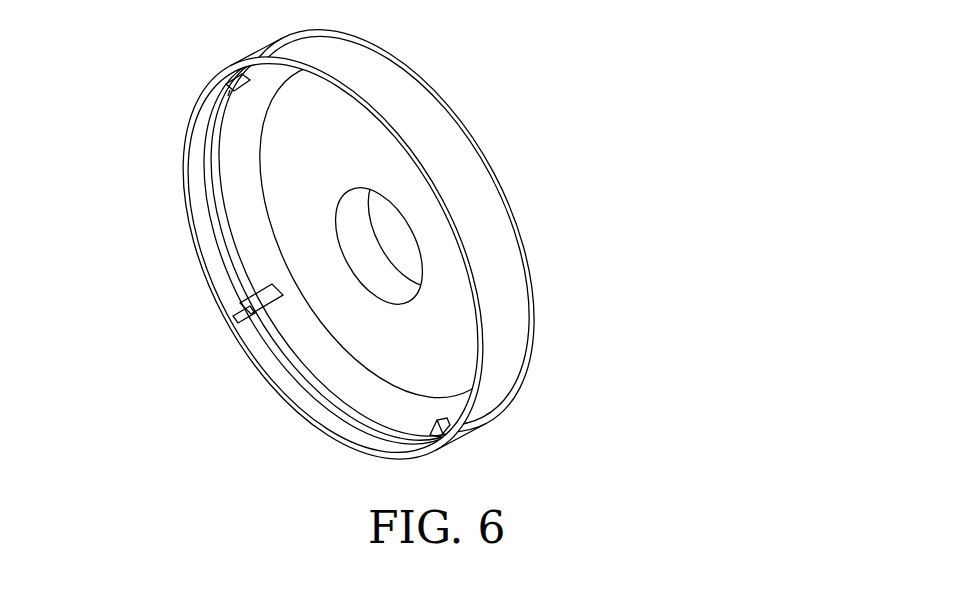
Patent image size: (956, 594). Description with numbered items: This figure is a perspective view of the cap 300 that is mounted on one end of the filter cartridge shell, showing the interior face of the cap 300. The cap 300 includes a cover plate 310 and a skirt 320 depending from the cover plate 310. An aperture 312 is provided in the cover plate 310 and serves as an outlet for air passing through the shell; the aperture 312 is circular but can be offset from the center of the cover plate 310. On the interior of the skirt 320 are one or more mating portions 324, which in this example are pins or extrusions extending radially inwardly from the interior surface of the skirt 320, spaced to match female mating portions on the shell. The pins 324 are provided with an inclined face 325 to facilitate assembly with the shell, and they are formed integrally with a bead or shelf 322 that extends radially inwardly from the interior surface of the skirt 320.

The cap 300 is at (332, 264).
The cover plate 310 is at (332, 167).
The aperture 312 is at (380, 257).
The skirt 320 is at (492, 375).
The bead or shelf 322 is at (340, 398).
The mating portions 324 is at (228, 85).
The inclined face 325 is at (450, 435).